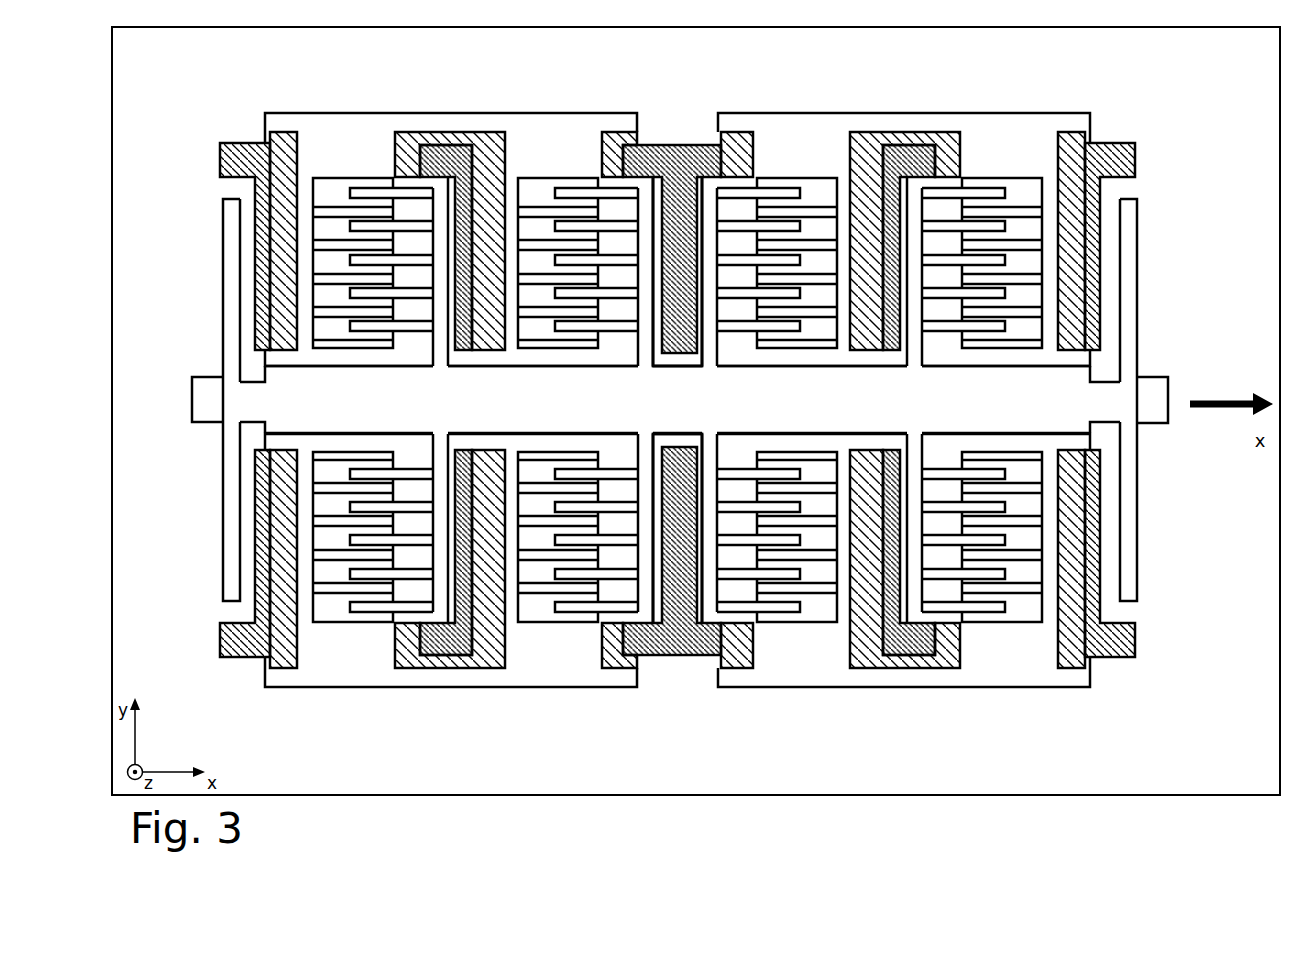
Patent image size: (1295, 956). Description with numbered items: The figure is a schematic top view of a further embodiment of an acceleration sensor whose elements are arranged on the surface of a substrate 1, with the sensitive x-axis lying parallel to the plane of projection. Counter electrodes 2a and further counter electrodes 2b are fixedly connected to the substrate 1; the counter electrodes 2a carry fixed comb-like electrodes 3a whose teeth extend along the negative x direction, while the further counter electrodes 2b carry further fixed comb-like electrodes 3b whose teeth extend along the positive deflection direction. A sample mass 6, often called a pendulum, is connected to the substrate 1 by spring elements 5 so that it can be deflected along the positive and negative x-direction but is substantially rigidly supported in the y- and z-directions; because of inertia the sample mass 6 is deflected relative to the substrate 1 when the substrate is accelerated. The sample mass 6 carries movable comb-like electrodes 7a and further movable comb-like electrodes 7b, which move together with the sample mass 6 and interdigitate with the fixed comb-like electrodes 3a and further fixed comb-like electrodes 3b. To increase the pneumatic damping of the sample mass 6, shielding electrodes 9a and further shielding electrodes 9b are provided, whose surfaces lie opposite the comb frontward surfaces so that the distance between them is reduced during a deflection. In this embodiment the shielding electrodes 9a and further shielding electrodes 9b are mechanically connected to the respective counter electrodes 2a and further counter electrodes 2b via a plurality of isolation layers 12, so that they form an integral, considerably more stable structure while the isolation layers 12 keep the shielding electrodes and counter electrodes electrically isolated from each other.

The substrate 1 is at (1017, 775).
The counter electrode 2a is at (800, 130).
The further counter electrode 2b is at (328, 137).
The fixed comb-like electrode 3a is at (848, 182).
The further fixed comb-like electrode 3b is at (262, 132).
The spring element 5 is at (232, 517).
The sample mass 6 is at (287, 404).
The movable comb-like electrode 7a is at (706, 200).
The further movable comb-like electrode 7b is at (403, 130).
The shielding electrode 9a is at (710, 545).
The further shielding electrode 9b is at (445, 520).
The isolation layer 12 is at (302, 190).